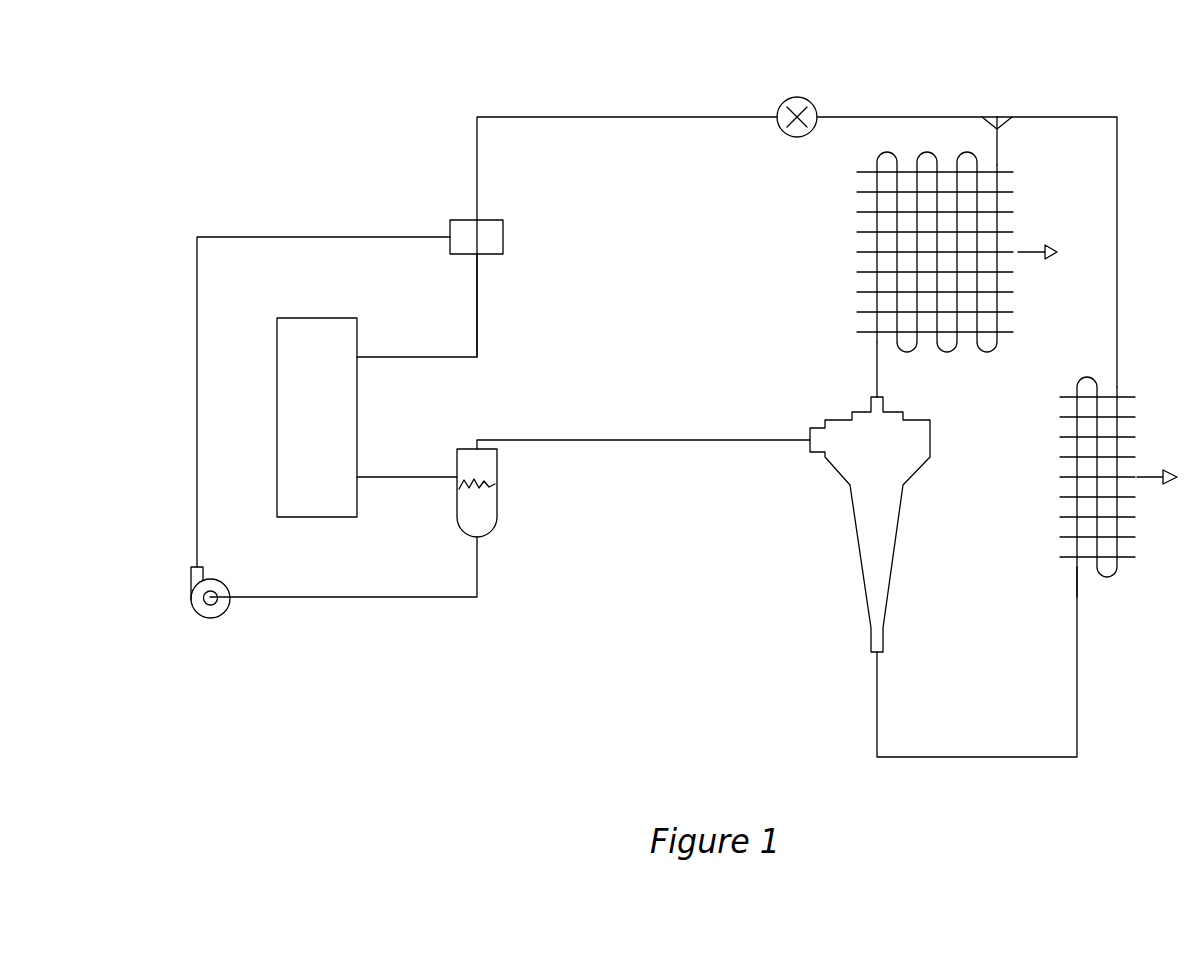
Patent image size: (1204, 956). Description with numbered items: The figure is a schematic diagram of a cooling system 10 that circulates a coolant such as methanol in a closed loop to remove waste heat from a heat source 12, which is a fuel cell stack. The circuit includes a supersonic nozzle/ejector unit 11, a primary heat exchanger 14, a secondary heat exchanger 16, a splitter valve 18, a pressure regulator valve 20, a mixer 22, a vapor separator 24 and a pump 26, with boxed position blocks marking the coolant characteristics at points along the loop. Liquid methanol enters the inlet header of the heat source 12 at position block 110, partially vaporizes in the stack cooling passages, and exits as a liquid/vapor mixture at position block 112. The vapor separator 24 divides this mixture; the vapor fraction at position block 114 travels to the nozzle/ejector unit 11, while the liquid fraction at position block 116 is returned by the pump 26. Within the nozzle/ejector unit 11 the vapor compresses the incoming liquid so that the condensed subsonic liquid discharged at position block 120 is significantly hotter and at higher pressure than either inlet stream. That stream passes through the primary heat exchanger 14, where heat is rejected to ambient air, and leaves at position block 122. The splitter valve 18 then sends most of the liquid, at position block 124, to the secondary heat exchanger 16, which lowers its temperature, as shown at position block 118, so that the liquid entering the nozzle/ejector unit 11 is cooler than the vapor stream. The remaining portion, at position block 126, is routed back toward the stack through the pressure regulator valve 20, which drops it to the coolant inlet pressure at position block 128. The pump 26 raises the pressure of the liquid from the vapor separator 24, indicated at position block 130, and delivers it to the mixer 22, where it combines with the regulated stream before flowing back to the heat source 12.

The cooling system 10 is at (687, 395).
The supersonic nozzle/ejector unit 11 is at (865, 545).
The heat source 12 is at (302, 332).
The primary heat exchanger 14 is at (1062, 486).
The secondary heat exchanger 16 is at (858, 241).
The splitter valve 18 is at (1003, 115).
The pressure regulator valve 20 is at (805, 100).
The mixer 22 is at (483, 225).
The vapor separator 24 is at (495, 471).
The pump 26 is at (224, 608).
The position block 110 is at (417, 305).
The position block 112 is at (407, 458).
The position block 114 is at (643, 425).
The position block 116 is at (343, 567).
The position block 118 is at (849, 369).
The position block 120 is at (977, 662).
The position block 122 is at (1086, 252).
The position block 124 is at (1023, 141).
The position block 126 is at (907, 99).
The position block 128 is at (627, 219).
The position block 130 is at (323, 383).